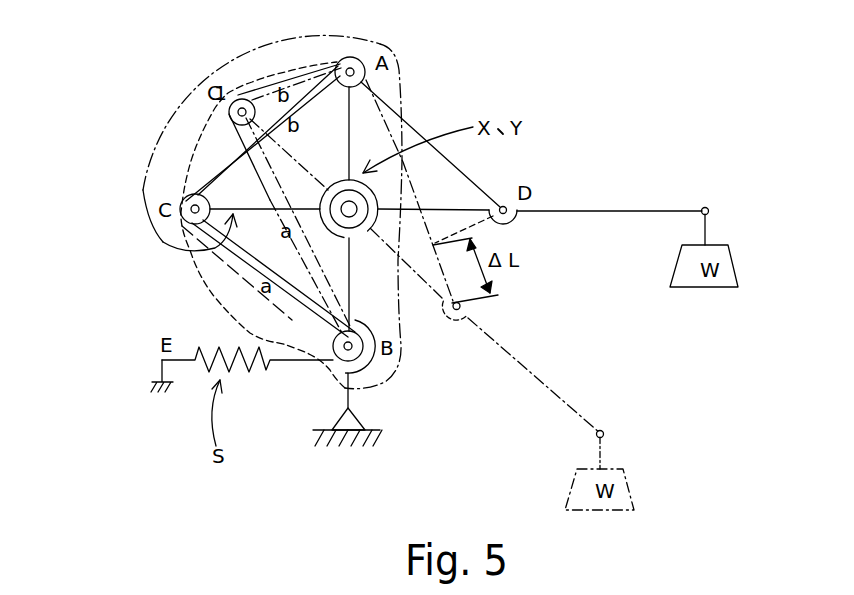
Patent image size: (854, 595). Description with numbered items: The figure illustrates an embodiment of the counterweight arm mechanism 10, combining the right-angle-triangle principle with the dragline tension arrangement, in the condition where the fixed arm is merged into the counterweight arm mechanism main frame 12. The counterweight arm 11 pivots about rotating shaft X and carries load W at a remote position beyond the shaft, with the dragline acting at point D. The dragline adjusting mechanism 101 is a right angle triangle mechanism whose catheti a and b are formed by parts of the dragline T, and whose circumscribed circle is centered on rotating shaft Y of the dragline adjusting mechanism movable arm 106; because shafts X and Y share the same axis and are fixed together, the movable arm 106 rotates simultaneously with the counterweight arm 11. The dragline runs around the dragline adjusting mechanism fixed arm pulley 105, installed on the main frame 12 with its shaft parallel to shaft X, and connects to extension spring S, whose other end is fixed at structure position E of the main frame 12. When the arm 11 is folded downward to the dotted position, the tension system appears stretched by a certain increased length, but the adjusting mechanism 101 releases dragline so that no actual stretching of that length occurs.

The counterweight arm mechanism 10 is at (577, 75).
The counterweight arm 11 is at (612, 208).
The counterweight arm mechanism main frame 12 is at (353, 295).
The dragline adjusting mechanism 101 is at (412, 74).
The dragline adjusting mechanism fixed arm pulley 105 is at (373, 375).
The dragline adjusting mechanism movable arm 106 is at (163, 242).